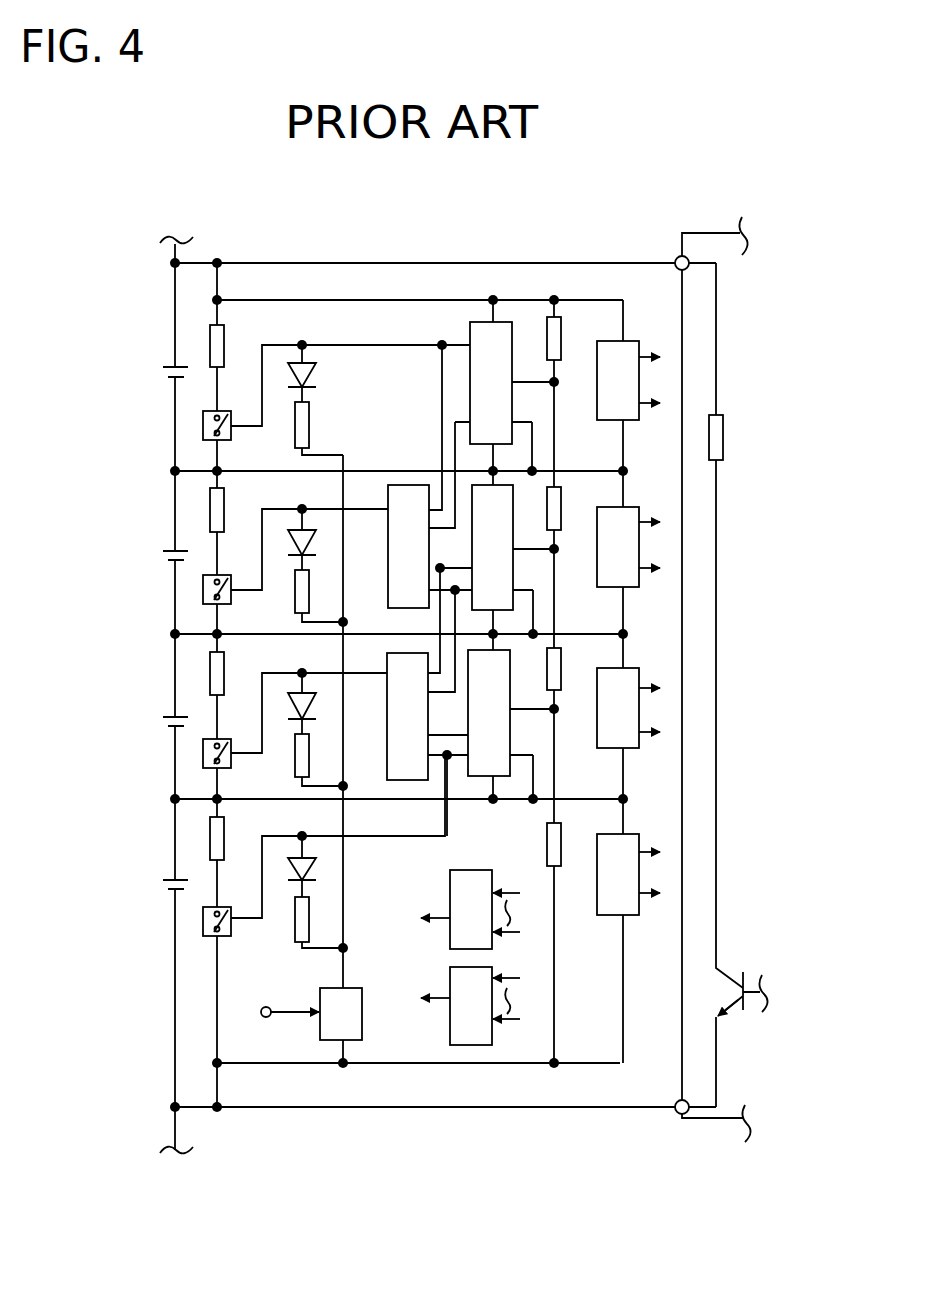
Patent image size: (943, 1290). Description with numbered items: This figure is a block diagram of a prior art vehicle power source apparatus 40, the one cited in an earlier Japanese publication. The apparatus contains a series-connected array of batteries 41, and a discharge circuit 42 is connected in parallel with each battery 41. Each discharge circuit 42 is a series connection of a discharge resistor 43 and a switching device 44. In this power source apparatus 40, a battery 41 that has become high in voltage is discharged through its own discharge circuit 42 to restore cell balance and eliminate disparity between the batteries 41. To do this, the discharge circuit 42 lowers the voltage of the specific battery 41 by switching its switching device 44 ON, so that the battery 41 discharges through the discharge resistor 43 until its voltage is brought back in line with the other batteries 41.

The vehicle power source apparatus 40 is at (578, 195).
The battery 41 is at (165, 366).
The discharge circuit 42 is at (340, 222).
The discharge resistor 43 is at (226, 343).
The switching device 44 is at (226, 410).